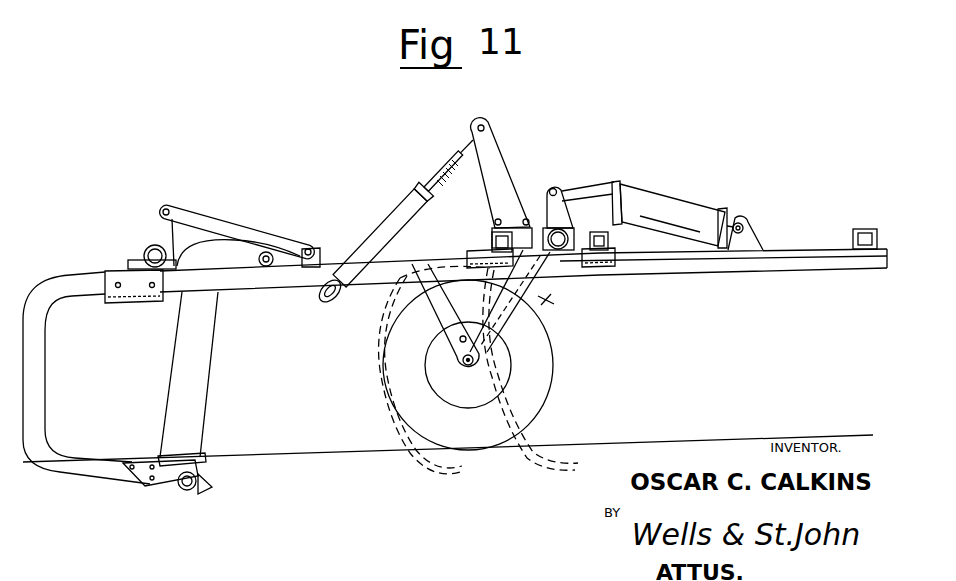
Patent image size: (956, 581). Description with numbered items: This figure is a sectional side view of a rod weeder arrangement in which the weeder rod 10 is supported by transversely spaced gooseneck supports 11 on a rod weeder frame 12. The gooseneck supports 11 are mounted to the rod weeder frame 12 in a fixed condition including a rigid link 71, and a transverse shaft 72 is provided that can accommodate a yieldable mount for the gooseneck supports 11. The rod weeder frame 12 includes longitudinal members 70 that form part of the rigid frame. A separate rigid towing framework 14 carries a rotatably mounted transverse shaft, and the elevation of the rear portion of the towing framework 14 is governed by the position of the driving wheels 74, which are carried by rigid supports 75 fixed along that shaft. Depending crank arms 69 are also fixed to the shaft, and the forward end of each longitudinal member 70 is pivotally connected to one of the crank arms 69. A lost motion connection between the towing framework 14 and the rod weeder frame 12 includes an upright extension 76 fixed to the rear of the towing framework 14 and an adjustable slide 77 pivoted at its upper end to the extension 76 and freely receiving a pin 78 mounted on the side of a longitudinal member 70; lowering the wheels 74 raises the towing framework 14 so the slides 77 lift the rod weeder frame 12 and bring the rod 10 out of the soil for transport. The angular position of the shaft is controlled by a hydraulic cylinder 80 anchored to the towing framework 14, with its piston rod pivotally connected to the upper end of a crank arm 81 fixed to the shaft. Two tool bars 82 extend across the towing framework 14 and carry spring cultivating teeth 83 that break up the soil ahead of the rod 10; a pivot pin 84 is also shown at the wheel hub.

The rod 10 is at (186, 490).
The gooseneck supports 11 is at (40, 391).
The rod weeder frame 12 is at (172, 300).
The towing framework 14 is at (715, 282).
The crank arms 69 is at (492, 304).
The longitudinal members 70 is at (187, 277).
The rigid link 71 is at (193, 216).
The transverse shaft 72 is at (142, 252).
The driving wheels 74 is at (400, 377).
The rigid supports 75 is at (520, 318).
The upright extension 76 is at (492, 149).
The adjustable slide 77 is at (390, 212).
The pin 78 is at (340, 294).
The hydraulic cylinder 80 is at (672, 206).
The crank arm 81 is at (548, 208).
The tool bars 82 is at (490, 240).
The spring cultivating teeth 83 is at (550, 302).
The pivot pin 84 is at (463, 362).